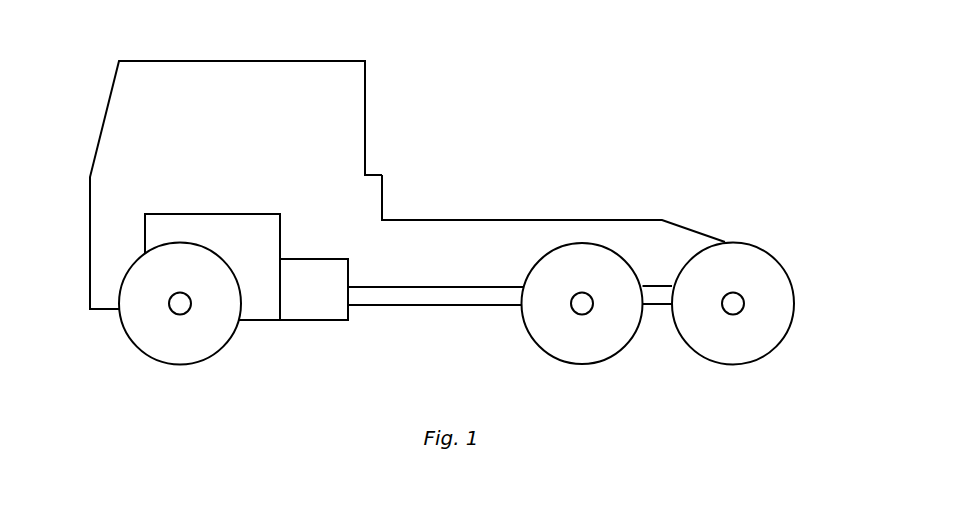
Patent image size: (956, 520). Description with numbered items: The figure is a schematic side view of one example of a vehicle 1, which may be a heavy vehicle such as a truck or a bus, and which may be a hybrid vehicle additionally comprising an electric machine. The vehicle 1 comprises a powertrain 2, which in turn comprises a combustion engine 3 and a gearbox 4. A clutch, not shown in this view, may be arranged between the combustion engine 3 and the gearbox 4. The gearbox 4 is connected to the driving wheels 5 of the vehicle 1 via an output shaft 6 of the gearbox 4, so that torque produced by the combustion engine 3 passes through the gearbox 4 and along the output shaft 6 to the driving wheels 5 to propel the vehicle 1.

The vehicle 1 is at (518, 120).
The powertrain 2 is at (377, 352).
The combustion engine 3 is at (232, 232).
The gearbox 4 is at (302, 267).
The driving wheels 5 is at (602, 347).
The output shaft 6 is at (455, 295).